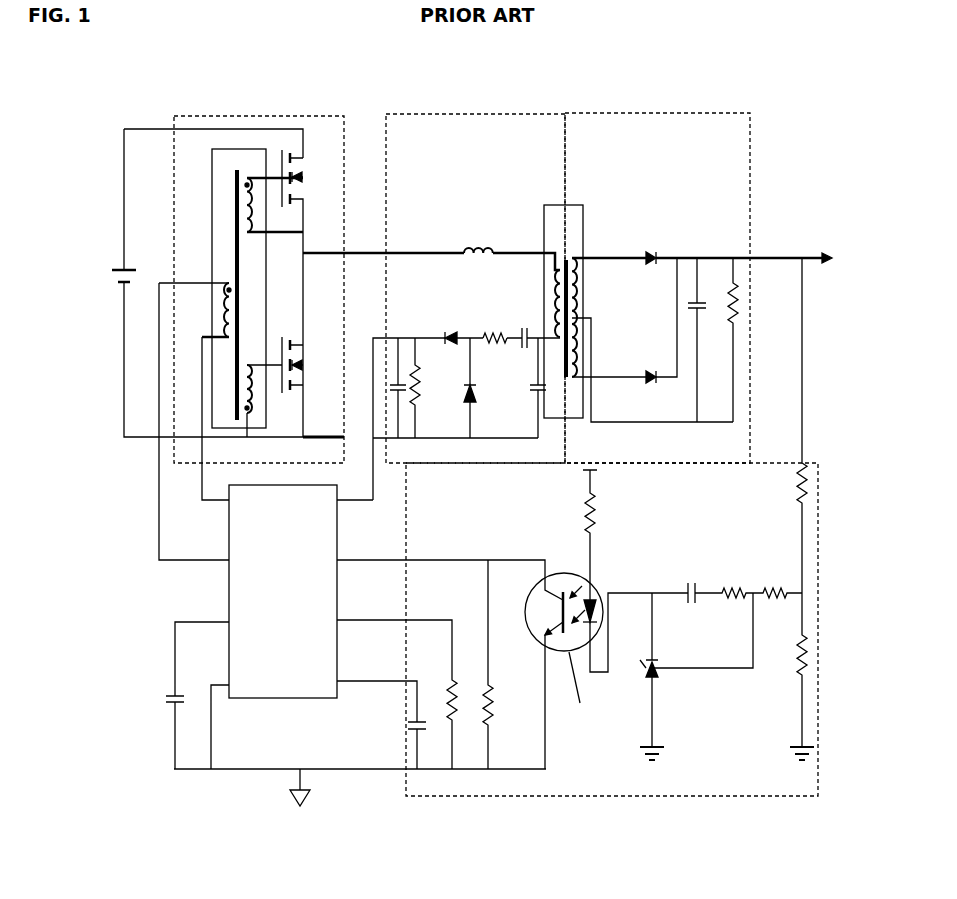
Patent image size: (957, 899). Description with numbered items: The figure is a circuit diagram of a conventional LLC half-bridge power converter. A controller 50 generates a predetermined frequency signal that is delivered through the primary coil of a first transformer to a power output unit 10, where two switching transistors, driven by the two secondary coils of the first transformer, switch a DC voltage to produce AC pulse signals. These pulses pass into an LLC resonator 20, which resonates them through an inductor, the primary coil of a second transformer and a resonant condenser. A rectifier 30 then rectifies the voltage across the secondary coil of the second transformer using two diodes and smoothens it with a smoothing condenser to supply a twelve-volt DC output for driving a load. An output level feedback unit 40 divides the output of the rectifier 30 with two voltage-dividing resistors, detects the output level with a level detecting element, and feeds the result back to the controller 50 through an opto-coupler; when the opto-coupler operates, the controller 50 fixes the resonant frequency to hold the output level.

The power output unit 10 is at (235, 115).
The LLC resonator 20 is at (447, 114).
The rectifier 30 is at (673, 113).
The output level feedback unit 40 is at (567, 788).
The controller 50 is at (268, 700).